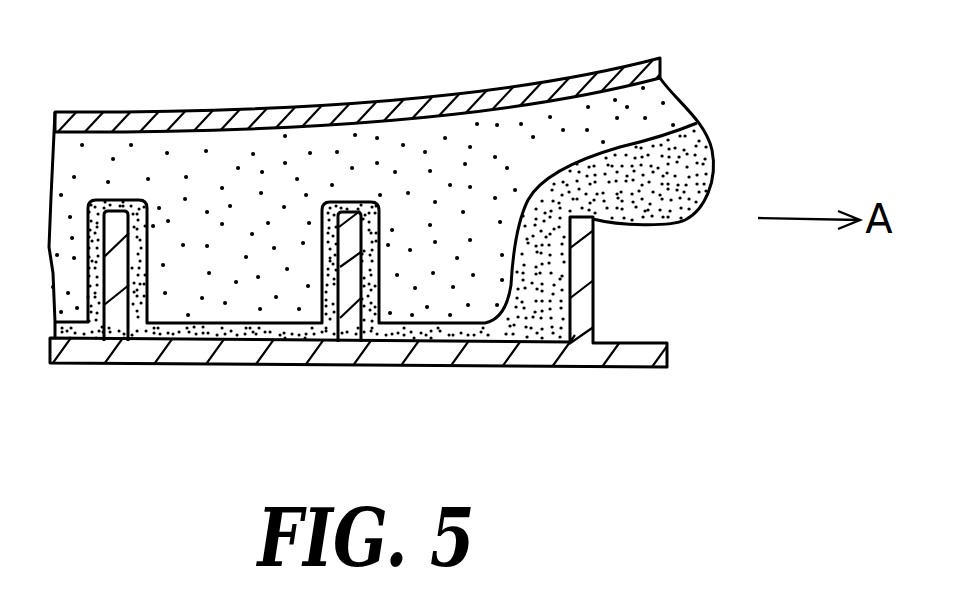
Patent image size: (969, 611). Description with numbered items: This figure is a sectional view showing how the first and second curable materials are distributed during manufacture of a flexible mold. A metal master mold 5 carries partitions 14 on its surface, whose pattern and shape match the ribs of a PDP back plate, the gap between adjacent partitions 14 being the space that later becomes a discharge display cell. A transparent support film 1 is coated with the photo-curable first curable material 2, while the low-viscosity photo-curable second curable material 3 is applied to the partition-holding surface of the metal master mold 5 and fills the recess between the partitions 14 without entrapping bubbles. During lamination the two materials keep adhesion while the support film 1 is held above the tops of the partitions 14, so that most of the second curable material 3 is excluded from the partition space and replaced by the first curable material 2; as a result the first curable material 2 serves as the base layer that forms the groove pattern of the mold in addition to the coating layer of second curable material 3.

The support film 1 is at (545, 83).
The first curable material 2 is at (650, 107).
The second curable material 3 is at (538, 322).
The metal master mold 5 is at (640, 357).
The partitions 14 is at (348, 287).